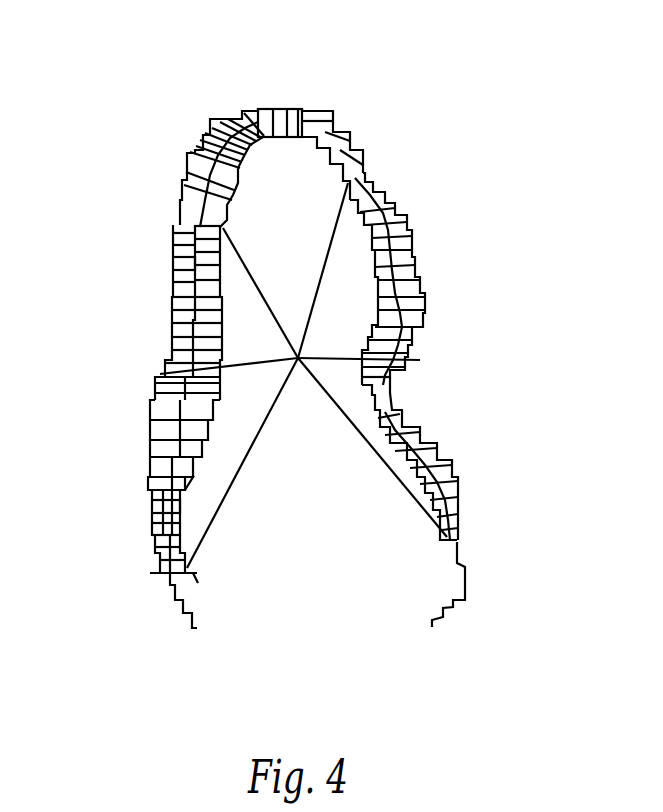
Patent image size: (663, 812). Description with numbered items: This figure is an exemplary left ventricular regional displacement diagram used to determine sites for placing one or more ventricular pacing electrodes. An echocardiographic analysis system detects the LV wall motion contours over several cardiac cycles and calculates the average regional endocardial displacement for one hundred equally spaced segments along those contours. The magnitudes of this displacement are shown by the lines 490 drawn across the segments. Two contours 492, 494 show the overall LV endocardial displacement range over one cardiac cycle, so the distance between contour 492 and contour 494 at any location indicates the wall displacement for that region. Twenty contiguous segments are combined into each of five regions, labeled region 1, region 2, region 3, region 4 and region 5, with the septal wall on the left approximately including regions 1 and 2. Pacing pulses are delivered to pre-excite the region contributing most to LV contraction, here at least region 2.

The region 1 is at (95, 380).
The region 2 is at (143, 157).
The region 3 is at (358, 103).
The region 4 is at (448, 140).
The region 5 is at (482, 370).
The lines 490 is at (182, 268).
The contour 492 is at (151, 507).
The contour 494 is at (180, 490).